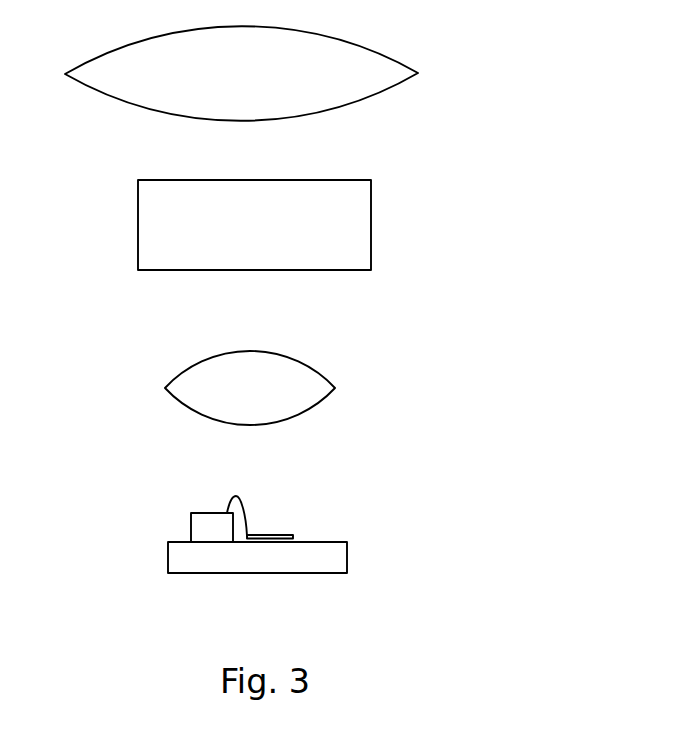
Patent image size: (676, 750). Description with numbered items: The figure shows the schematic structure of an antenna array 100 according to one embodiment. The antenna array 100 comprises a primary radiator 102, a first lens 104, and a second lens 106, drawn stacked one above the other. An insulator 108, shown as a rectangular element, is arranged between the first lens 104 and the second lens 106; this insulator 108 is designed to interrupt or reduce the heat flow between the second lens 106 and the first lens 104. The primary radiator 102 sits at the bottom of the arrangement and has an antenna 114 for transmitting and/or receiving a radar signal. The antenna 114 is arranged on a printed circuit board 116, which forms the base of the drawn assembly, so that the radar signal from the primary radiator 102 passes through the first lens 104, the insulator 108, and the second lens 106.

The antenna array 100 is at (440, 550).
The primary radiator 102 is at (180, 505).
The first lens 104 is at (335, 388).
The second lens 106 is at (418, 73).
The insulator 108 is at (371, 206).
The antenna 114 is at (273, 522).
The printed circuit board 116 is at (168, 573).